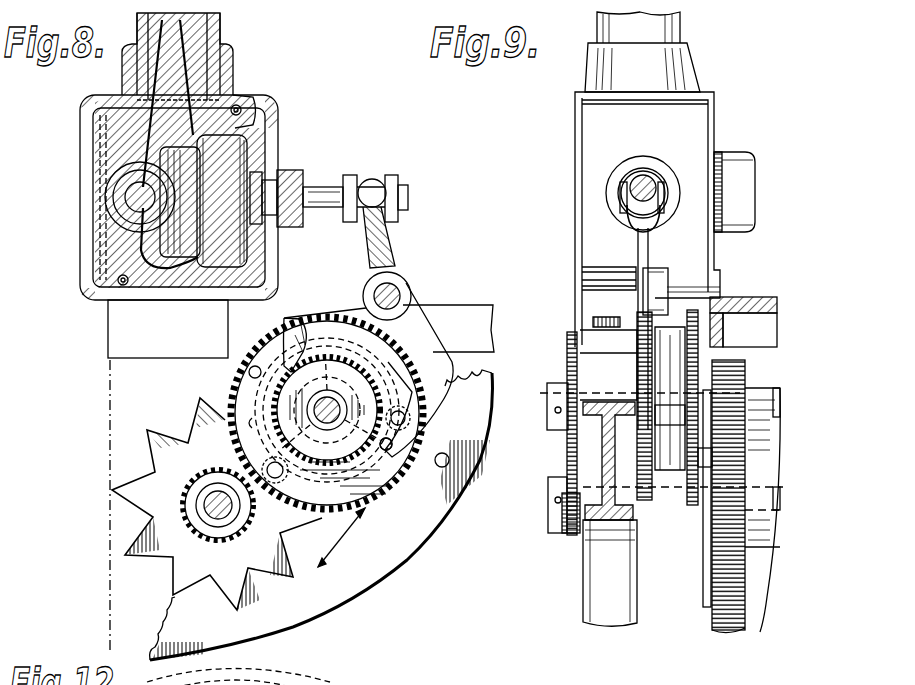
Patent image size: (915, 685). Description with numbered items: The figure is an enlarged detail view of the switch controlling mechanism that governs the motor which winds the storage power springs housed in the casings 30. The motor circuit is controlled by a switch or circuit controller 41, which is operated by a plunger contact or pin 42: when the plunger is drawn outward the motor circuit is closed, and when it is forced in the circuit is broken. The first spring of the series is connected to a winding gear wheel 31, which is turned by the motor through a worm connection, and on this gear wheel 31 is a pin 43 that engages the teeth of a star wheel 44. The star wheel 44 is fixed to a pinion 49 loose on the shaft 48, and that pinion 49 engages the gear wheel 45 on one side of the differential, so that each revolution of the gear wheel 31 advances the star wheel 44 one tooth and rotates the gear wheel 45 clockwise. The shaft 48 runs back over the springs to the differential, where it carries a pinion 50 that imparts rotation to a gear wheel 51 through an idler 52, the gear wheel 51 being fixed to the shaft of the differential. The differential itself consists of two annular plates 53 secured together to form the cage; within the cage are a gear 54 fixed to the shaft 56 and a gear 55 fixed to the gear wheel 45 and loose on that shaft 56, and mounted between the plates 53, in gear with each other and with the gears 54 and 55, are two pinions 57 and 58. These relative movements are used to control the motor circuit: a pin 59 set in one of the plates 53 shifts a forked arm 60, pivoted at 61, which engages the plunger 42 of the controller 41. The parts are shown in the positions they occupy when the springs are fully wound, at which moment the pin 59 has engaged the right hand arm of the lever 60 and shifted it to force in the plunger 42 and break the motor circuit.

In FIG. 9, the casings 30 is at (760, 617).
In FIG. 8, the gear wheel 31 is at (340, 604).
In FIG. 9, the gear wheel 31 is at (740, 363).
In FIG. 8, the switch 41 is at (211, 156).
In FIG. 9, the switch 41 is at (665, 206).
In FIG. 8, the plunger contact or pin 42 is at (343, 178).
In FIG. 9, the plunger contact or pin 42 is at (653, 218).
In FIG. 8, the pin 43 is at (449, 463).
In FIG. 9, the pin 43 is at (545, 400).
In FIG. 8, the star wheel 44 is at (138, 540).
In FIG. 9, the star wheel 44 is at (707, 580).
In FIG. 8, the gear wheel 45 is at (226, 392).
In FIG. 8, the shaft 48 is at (215, 520).
In FIG. 9, the shaft 48 is at (780, 507).
In FIG. 9, the pinion 49 is at (687, 538).
In FIG. 9, the pinion 50 is at (570, 535).
In FIG. 9, the gear wheel 51 is at (567, 357).
In FIG. 9, the idler 52 is at (563, 455).
In FIG. 8, the annular plates 53 is at (372, 478).
In FIG. 9, the annular plates 53 is at (702, 315).
In FIG. 8, the gear 54 is at (353, 424).
In FIG. 9, the gear 54 is at (640, 369).
In FIG. 9, the gear 55 is at (697, 364).
In FIG. 8, the shaft 56 is at (333, 405).
In FIG. 9, the shaft 56 is at (778, 388).
In FIG. 8, the pinion 57 is at (222, 425).
In FIG. 8, the pinion 58 is at (228, 354).
In FIG. 8, the pin 59 is at (392, 446).
In FIG. 8, the forked arm 60 is at (418, 322).
In FIG. 9, the forked arm 60 is at (650, 388).
In FIG. 8, the pivot 61 is at (393, 292).